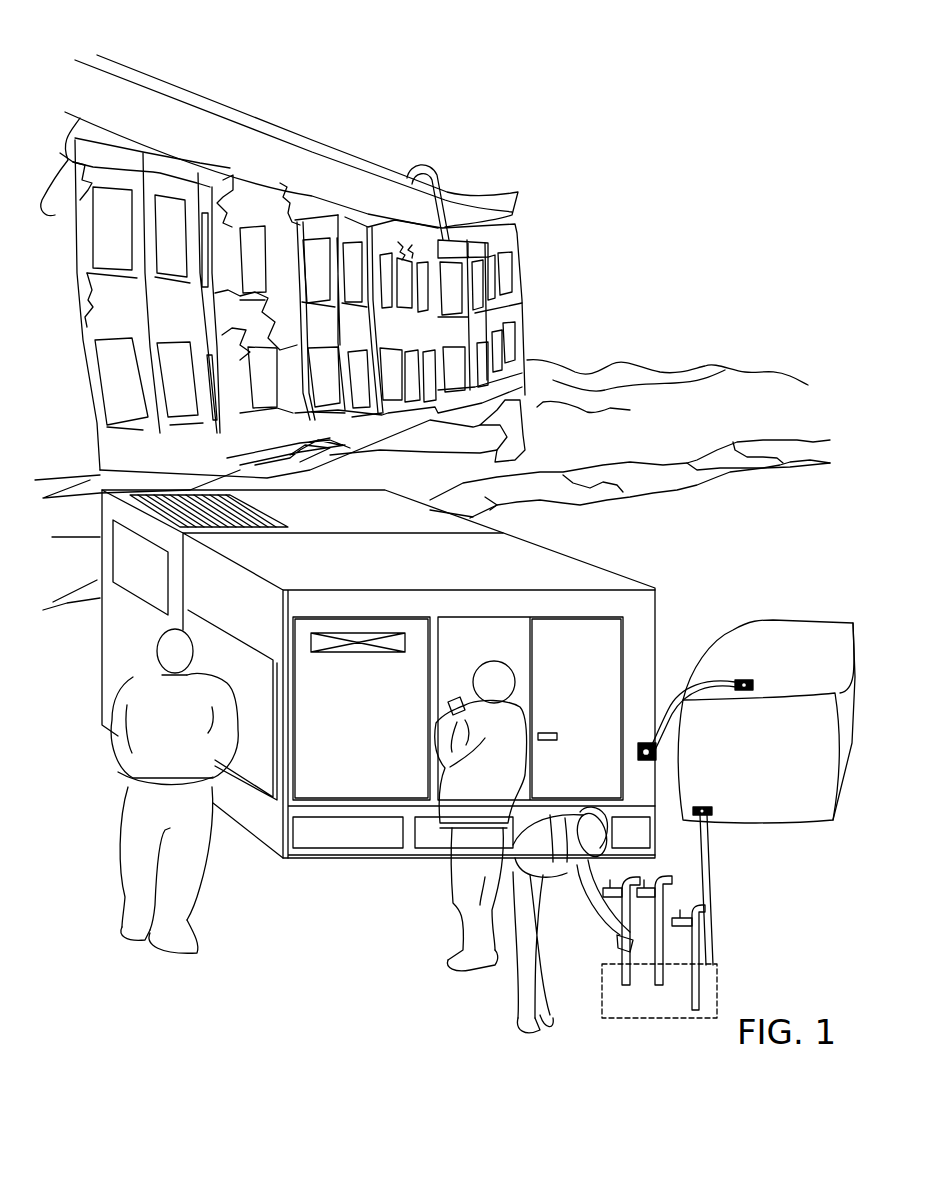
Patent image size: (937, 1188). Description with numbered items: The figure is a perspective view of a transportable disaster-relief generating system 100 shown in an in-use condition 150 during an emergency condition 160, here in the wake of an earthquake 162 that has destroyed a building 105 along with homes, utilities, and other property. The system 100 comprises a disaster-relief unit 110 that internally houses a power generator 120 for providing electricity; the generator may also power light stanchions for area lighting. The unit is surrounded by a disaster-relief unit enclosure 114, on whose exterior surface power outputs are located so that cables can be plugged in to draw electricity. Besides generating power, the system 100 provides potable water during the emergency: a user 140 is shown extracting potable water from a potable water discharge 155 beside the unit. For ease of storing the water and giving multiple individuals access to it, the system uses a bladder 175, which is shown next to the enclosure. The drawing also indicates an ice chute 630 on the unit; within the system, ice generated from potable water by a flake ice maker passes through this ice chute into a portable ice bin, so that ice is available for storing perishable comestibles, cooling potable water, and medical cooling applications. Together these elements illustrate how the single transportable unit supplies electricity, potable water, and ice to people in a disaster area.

The transportable disaster-relief generating system 100 is at (586, 96).
The building 105 is at (286, 166).
The disaster-relief unit 110 is at (545, 588).
The disaster-relief unit enclosure 114 is at (548, 632).
The power generator 120 is at (307, 518).
The user 140 is at (417, 745).
The in-use condition 150 is at (619, 139).
The potable water discharge 155 is at (661, 943).
The emergency condition 160 is at (646, 173).
The earthquake 162 is at (674, 424).
The bladder 175 is at (777, 797).
The ice chute 630 is at (358, 651).